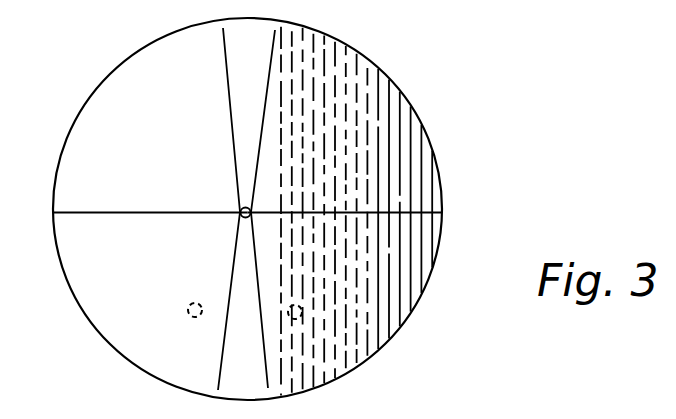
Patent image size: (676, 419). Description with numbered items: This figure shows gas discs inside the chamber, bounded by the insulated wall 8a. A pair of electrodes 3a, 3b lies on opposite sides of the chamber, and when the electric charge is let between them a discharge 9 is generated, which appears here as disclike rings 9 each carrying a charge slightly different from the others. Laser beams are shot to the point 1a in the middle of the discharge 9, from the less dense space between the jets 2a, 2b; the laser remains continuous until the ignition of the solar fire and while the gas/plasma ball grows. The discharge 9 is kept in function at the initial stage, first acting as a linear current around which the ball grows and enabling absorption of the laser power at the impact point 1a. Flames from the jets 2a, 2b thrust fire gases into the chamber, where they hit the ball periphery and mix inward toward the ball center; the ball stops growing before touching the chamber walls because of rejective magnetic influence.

The laser impact point 1a is at (242, 209).
The jet 2a is at (196, 294).
The jet 2b is at (301, 296).
The electrode 3a is at (128, 215).
The electrode 3b is at (369, 216).
The insulated wall 8a is at (247, 209).
The discharge 9 is at (356, 211).